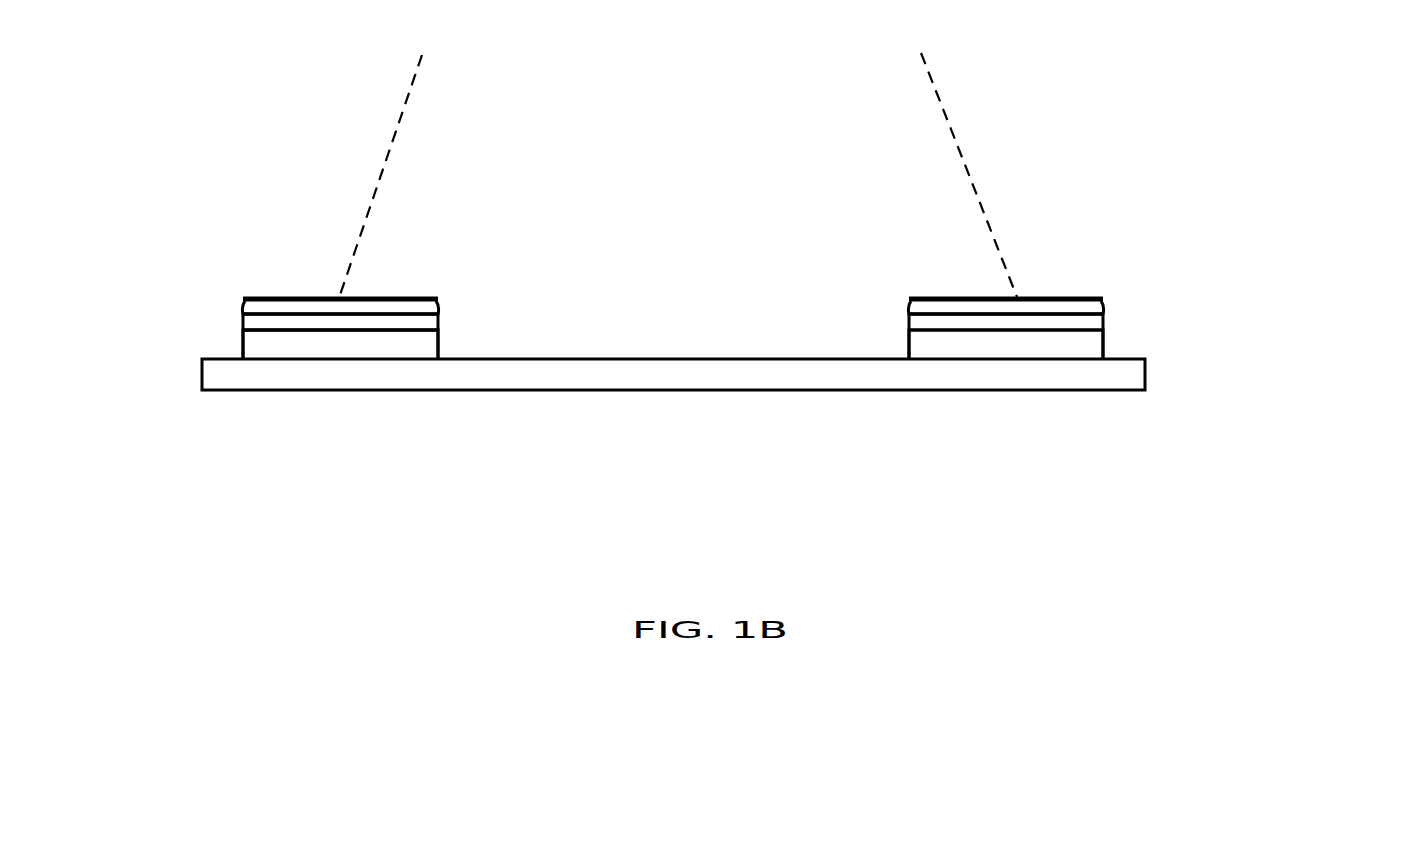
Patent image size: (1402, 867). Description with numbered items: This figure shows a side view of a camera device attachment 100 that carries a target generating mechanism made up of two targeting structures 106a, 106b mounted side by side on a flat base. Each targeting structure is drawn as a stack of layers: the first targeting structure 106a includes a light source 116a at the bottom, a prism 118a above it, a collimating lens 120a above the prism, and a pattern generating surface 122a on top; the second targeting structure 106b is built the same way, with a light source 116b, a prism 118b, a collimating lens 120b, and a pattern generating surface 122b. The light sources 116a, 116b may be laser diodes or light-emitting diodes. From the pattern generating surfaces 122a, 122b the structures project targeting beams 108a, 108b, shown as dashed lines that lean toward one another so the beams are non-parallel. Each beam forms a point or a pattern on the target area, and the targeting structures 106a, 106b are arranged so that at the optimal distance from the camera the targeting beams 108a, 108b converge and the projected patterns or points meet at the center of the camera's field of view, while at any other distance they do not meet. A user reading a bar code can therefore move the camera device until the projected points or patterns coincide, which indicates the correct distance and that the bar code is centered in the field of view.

The camera device attachment 100 is at (1032, 391).
The targeting structure 106a is at (287, 220).
The targeting structure 106b is at (1073, 210).
The targeting beam 108a is at (408, 93).
The targeting beam 108b is at (1020, 175).
The light source 116a is at (243, 350).
The light source 116b is at (1103, 350).
The prism 118a is at (243, 322).
The prism 118b is at (1103, 316).
The collimating lens 120a is at (243, 304).
The collimating lens 120b is at (1103, 304).
The pattern generating surface 122a is at (253, 298).
The pattern generating surface 122b is at (1085, 298).